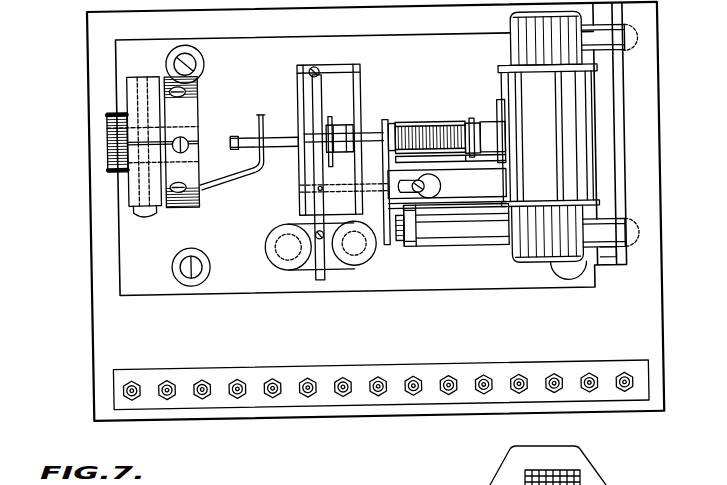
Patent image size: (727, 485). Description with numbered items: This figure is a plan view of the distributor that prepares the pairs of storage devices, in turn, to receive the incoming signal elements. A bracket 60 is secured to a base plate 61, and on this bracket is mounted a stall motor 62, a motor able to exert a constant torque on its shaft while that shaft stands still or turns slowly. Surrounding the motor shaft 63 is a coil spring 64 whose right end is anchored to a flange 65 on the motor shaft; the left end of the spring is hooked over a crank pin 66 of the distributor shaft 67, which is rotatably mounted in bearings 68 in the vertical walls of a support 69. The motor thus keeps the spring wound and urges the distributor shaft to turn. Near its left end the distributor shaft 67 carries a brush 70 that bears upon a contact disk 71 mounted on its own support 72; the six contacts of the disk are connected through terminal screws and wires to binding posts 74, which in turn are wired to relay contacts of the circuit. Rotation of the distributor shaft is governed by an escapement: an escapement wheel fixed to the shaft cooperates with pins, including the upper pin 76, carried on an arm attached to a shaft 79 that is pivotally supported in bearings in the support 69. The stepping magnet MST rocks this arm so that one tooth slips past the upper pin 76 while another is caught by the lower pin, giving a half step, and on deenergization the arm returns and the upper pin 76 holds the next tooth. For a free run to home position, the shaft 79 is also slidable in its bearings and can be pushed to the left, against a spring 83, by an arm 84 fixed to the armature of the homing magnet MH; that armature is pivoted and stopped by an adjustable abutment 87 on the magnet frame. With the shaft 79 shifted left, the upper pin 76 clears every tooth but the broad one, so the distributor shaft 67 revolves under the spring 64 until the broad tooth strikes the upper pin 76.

The bracket 60 is at (619, 180).
The base plate 61 is at (375, 211).
The stall motor 62 is at (573, 139).
The motor shaft 63 is at (477, 127).
The coil spring 64 is at (420, 130).
The flange 65 is at (468, 131).
The crank pin 66 is at (389, 135).
The distributor shaft 67 is at (270, 140).
The bearings 68 is at (290, 142).
The support 69 is at (360, 88).
The brush 70 is at (215, 182).
The contact disk 71 is at (204, 100).
The support 72 is at (130, 195).
The binding posts 74 is at (227, 385).
The upper pin 76 is at (328, 167).
The shaft 79 is at (344, 183).
The spring 83 is at (296, 183).
The arm 84 is at (405, 208).
The abutment 87 is at (429, 193).
The stepping magnet MST is at (262, 250).
The homing magnet MH is at (473, 245).